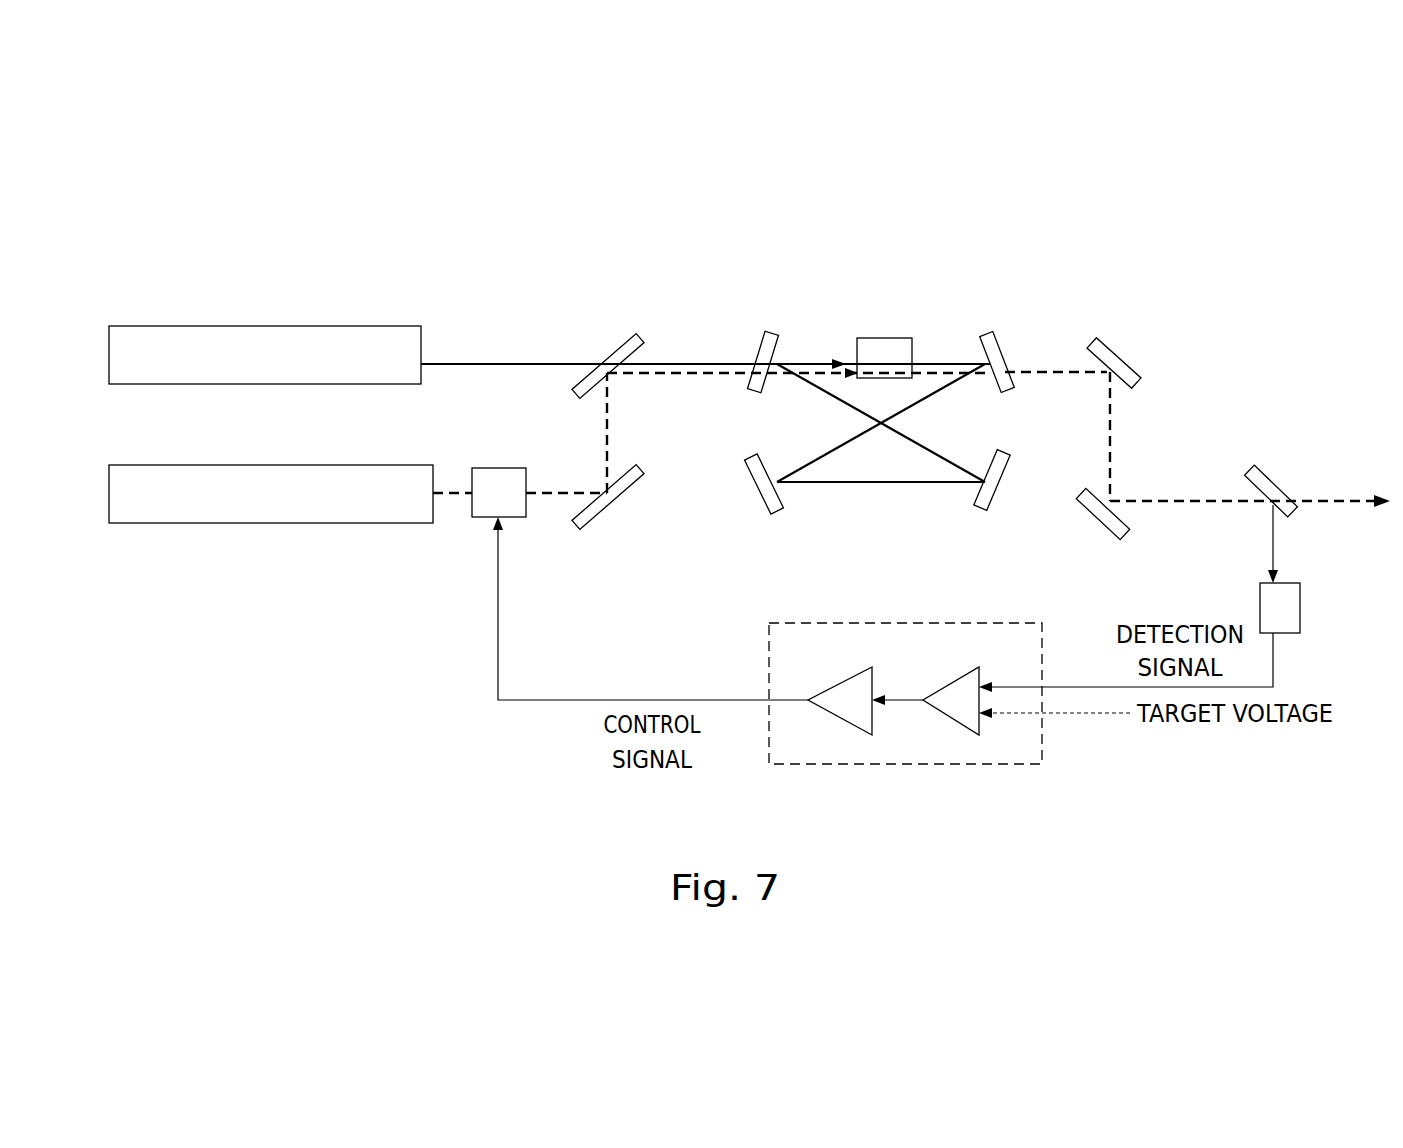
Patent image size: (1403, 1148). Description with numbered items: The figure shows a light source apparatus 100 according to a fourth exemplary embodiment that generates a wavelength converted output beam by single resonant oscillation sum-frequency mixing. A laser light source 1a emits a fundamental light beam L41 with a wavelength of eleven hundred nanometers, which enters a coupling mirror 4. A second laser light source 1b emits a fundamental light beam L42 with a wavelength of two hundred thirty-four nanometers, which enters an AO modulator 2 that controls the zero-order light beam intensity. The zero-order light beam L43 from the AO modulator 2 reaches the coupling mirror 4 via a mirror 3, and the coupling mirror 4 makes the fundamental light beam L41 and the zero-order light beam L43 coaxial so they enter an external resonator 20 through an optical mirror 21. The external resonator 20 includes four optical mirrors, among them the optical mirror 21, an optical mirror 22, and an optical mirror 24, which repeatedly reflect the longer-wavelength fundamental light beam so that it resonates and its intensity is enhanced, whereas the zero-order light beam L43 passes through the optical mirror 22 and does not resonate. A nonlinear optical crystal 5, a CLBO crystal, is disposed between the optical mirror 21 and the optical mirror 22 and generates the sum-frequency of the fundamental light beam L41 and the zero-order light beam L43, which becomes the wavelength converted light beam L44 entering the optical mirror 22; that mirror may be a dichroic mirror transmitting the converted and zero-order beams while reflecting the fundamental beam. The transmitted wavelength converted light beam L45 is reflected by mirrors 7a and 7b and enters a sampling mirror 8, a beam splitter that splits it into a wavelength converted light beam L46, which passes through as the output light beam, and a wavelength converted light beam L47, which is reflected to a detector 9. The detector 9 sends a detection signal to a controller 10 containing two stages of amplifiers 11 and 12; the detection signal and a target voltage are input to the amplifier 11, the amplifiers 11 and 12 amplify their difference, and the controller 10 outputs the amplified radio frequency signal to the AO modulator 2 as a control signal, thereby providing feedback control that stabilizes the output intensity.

The light source apparatus 100 is at (205, 207).
The laser light source 1a is at (270, 326).
The laser light source 1b is at (268, 523).
The AO modulator 2 is at (516, 468).
The mirror 3 is at (640, 472).
The coupling mirror 4 is at (635, 332).
The nonlinear optical crystal 5 is at (878, 335).
The mirror 7a is at (1118, 345).
The mirror 7b is at (1110, 535).
The sampling mirror 8 is at (1280, 482).
The detector 9 is at (1300, 612).
The controller 10 is at (1045, 672).
The amplifier 11 is at (980, 676).
The amplifier 12 is at (873, 678).
The external resonator 20 is at (956, 230).
The optical mirror 21 is at (768, 330).
The optical mirror 22 is at (990, 330).
The optical mirror 24 is at (990, 512).
The fundamental light beam L41 is at (457, 362).
The fundamental light beam L42 is at (448, 470).
The zero-order light beam L43 is at (553, 500).
The wavelength converted light beam L44 is at (931, 360).
The wavelength converted light beam L45 is at (1037, 365).
The wavelength converted light beam L46 is at (1340, 492).
The wavelength converted light beam L47 is at (1280, 557).